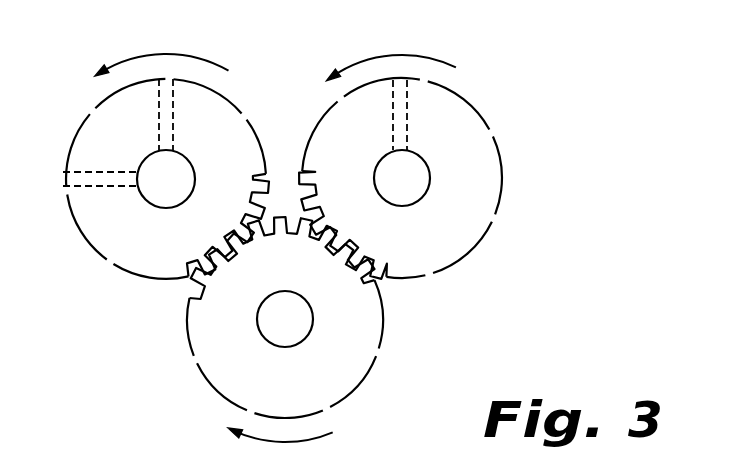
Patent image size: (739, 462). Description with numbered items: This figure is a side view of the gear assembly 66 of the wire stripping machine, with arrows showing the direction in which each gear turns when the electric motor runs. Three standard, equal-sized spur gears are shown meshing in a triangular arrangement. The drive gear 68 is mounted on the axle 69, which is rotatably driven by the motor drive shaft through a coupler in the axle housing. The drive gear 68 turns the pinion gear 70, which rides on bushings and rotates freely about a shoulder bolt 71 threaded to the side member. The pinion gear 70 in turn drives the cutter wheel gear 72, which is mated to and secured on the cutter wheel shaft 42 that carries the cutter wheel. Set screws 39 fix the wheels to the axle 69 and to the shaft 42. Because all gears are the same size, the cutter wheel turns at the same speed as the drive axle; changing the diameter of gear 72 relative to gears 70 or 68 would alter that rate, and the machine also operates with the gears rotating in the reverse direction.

The set screw 39 is at (160, 118).
The cutter wheel shaft 42 is at (431, 183).
The gear assembly 66 is at (451, 167).
The drive gear 68 is at (228, 100).
The axle 69 is at (137, 190).
The pinion gear 70 is at (187, 333).
The shoulder bolt 71 is at (313, 310).
The cutter wheel gear 72 is at (502, 150).